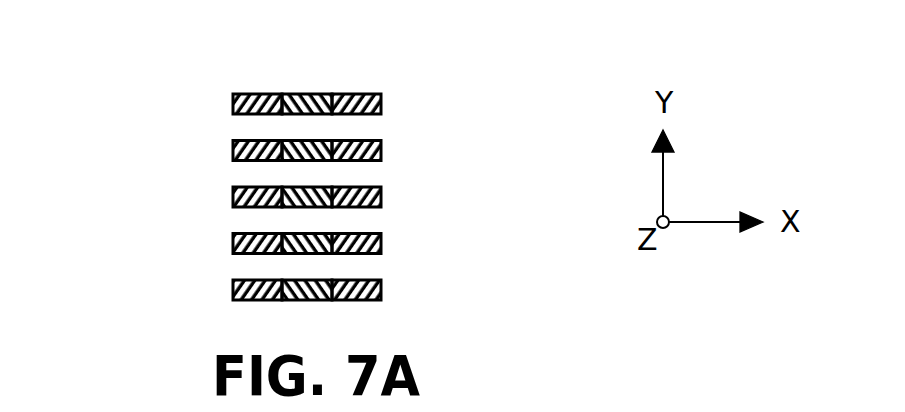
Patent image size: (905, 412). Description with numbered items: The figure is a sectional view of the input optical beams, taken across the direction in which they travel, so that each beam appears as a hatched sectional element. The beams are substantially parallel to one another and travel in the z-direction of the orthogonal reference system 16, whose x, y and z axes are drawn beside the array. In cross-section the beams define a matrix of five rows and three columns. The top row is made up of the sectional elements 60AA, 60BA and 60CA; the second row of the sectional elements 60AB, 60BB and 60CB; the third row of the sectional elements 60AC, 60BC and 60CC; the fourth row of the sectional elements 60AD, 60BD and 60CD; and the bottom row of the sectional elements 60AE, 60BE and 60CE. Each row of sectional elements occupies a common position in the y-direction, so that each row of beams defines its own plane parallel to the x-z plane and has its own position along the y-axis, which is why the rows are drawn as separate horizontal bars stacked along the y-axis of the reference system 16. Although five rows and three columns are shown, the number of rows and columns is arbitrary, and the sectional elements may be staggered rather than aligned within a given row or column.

The orthogonal reference system 16 is at (742, 118).
The sectional element 60AA is at (249, 93).
The sectional element 60BA is at (310, 93).
The sectional element 60CA is at (357, 93).
The sectional element 60AB is at (252, 140).
The sectional element 60BB is at (305, 140).
The sectional element 60CB is at (358, 140).
The sectional element 60AC is at (252, 187).
The sectional element 60BC is at (305, 187).
The sectional element 60CC is at (358, 187).
The sectional element 60AD is at (252, 234).
The sectional element 60BD is at (305, 234).
The sectional element 60CD is at (358, 234).
The sectional element 60AE is at (252, 280).
The sectional element 60BE is at (305, 280).
The sectional element 60CE is at (358, 280).